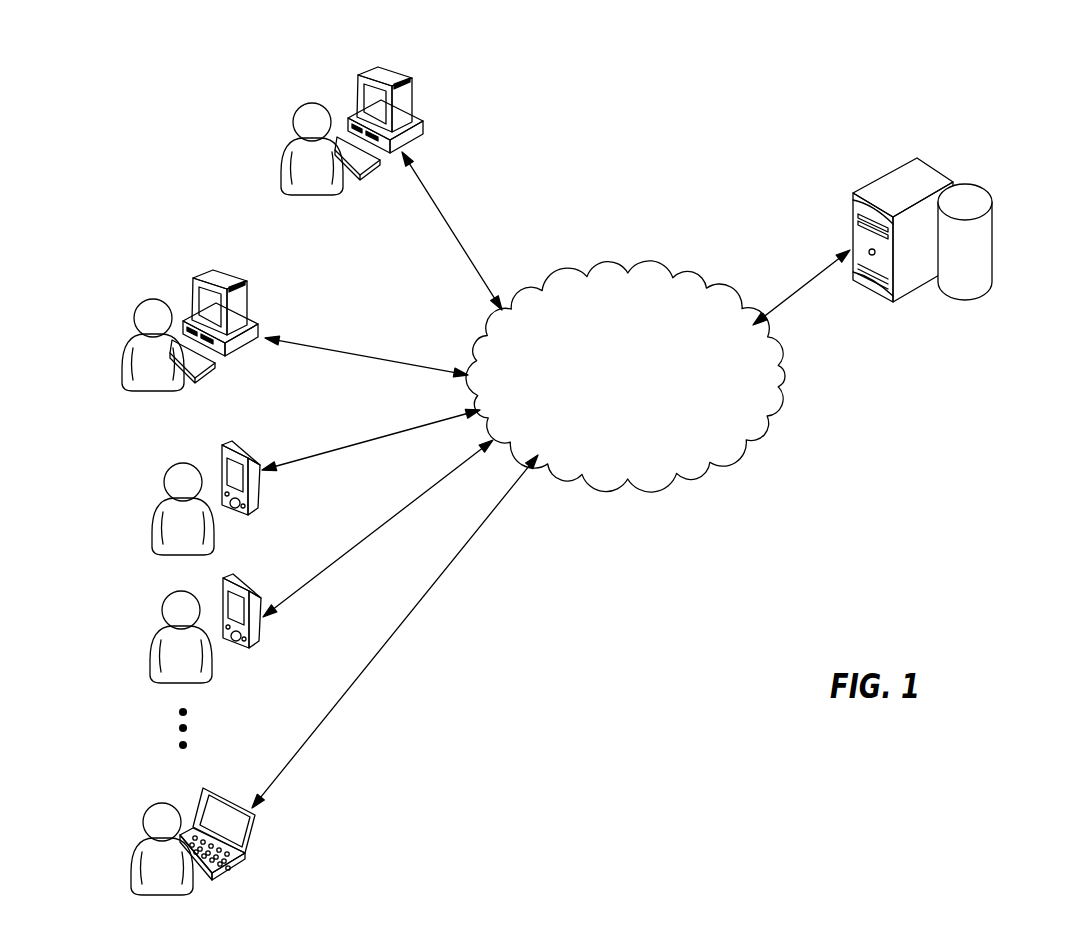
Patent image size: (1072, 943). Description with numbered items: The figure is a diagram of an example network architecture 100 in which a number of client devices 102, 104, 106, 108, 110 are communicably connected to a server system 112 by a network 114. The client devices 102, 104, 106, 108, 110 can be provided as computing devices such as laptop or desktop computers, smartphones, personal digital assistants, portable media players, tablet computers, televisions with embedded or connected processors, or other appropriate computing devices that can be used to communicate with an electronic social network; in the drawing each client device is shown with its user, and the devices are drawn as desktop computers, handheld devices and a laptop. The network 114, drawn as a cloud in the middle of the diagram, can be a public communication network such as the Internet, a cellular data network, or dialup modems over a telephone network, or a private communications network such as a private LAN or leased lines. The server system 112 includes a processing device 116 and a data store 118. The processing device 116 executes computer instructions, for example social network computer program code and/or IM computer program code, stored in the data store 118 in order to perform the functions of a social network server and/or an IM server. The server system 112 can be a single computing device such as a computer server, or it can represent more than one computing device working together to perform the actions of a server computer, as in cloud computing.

The network architecture 100 is at (740, 138).
The client device 102 is at (377, 73).
The client device 104 is at (213, 278).
The client device 106 is at (237, 443).
The client device 108 is at (242, 580).
The client device 110 is at (205, 790).
The server system 112 is at (861, 309).
The network 114 is at (638, 273).
The processing device 116 is at (933, 170).
The data store 118 is at (992, 235).